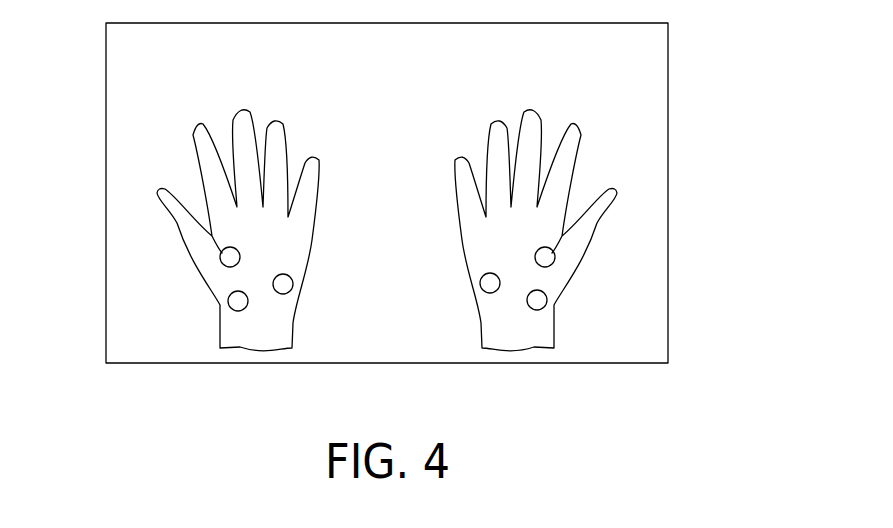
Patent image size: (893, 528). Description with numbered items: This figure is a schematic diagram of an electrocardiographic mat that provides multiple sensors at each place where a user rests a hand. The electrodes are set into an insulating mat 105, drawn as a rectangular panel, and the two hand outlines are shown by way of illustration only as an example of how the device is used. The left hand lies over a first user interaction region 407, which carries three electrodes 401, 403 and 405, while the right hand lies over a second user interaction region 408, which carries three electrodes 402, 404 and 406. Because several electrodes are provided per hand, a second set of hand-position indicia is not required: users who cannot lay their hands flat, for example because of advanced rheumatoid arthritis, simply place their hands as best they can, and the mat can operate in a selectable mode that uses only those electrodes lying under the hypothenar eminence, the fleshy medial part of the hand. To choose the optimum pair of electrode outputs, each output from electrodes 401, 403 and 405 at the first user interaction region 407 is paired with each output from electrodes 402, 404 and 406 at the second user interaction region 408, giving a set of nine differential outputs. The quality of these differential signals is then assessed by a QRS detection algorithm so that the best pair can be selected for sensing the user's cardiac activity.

The insulating mat 105 is at (668, 69).
The electrode 401 is at (291, 291).
The electrode 402 is at (481, 290).
The electrode 403 is at (230, 307).
The electrode 404 is at (545, 307).
The electrode 405 is at (221, 263).
The electrode 406 is at (555, 259).
The first user interaction region 407 is at (122, 294).
The second user interaction region 408 is at (600, 292).